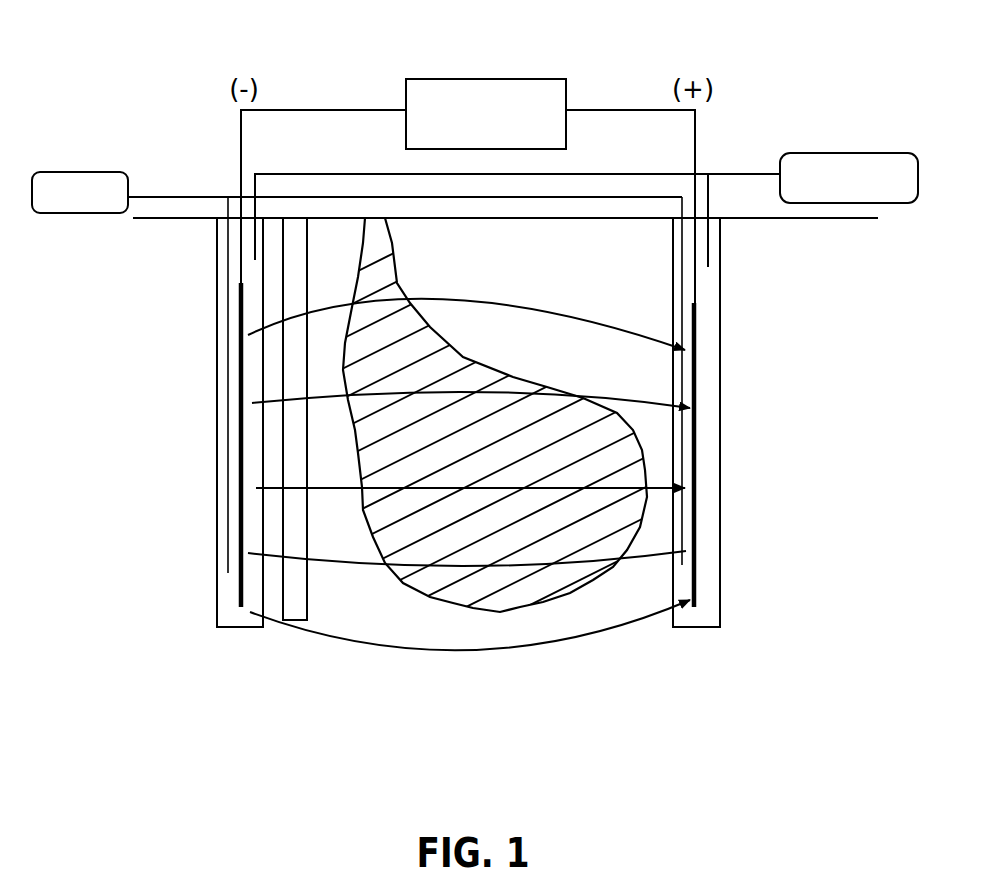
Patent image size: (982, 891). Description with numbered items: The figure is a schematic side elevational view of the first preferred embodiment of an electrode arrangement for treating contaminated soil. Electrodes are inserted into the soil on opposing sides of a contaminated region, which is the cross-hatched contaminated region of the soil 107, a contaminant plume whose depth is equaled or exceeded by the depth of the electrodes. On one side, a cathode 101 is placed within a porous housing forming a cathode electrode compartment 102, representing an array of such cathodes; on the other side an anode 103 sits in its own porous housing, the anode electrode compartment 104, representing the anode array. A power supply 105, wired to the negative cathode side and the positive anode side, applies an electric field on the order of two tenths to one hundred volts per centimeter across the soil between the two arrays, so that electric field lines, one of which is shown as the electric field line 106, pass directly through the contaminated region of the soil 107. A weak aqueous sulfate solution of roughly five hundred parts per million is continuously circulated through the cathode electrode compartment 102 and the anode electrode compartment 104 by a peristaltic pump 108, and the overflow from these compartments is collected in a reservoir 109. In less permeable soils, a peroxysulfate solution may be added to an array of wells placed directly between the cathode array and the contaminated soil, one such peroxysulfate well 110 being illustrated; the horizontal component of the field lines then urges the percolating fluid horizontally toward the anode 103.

The cathode 101 is at (240, 375).
The cathode electrode compartment 102 is at (216, 510).
The anode 103 is at (698, 385).
The anode electrode compartment 104 is at (721, 503).
The power supply 105 is at (458, 79).
The electric field line 106 is at (463, 650).
The contaminated region of the soil 107 is at (522, 382).
The peristaltic pump 108 is at (98, 215).
The reservoir 109 is at (826, 153).
The peroxysulfate well 110 is at (303, 601).